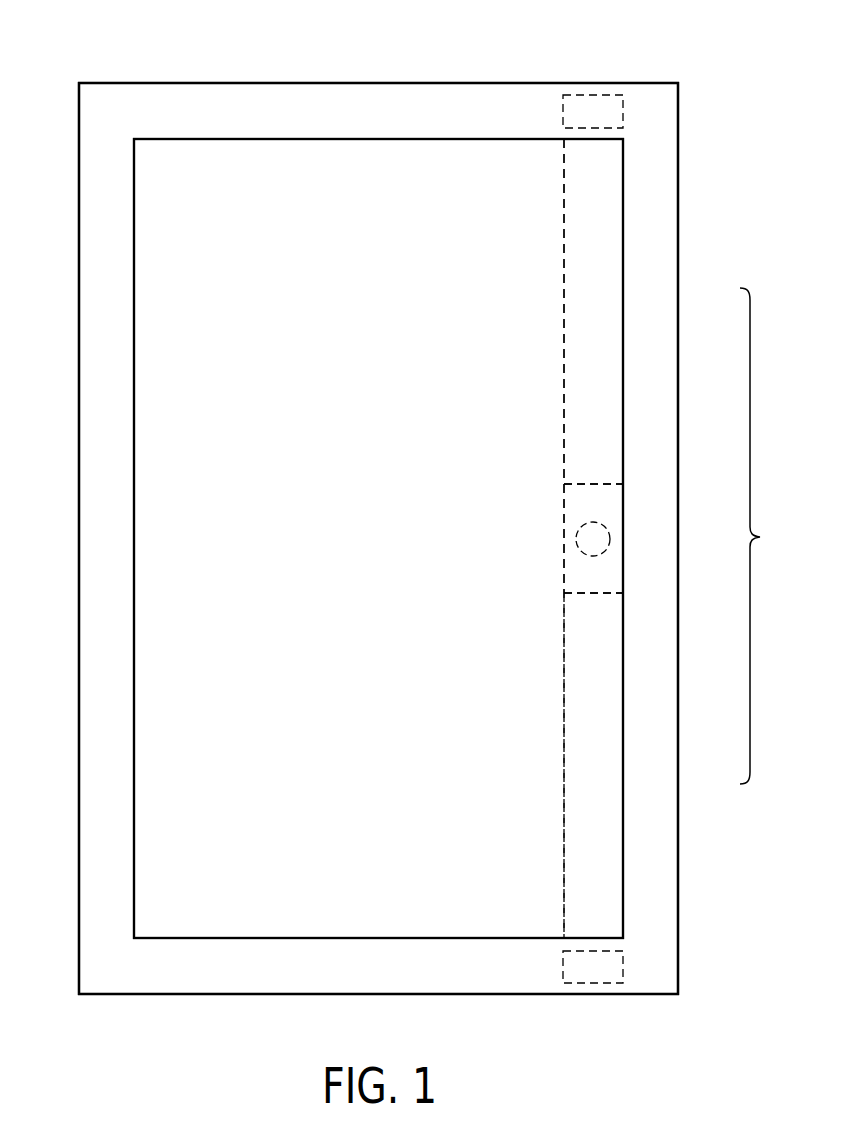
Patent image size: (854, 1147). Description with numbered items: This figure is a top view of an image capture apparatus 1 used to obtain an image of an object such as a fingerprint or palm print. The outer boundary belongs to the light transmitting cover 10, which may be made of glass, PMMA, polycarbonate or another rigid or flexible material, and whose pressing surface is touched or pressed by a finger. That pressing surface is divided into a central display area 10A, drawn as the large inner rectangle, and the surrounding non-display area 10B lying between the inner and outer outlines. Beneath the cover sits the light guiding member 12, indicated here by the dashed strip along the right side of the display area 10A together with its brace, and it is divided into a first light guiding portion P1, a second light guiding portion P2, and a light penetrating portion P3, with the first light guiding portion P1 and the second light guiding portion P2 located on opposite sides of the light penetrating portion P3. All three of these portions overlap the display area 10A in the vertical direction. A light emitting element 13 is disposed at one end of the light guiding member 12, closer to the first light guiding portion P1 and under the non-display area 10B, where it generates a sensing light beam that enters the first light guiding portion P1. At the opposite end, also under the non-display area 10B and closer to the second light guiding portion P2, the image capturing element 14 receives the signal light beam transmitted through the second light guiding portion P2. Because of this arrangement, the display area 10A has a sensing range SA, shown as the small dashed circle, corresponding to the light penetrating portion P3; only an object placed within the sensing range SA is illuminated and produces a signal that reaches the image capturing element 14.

The image capture apparatus 1 is at (688, 55).
The light transmitting cover 10 is at (679, 842).
The display area 10A is at (412, 175).
The non-display area 10B is at (255, 110).
The light guiding member 12 is at (678, 538).
The light emitting element 13 is at (593, 95).
The image capturing element 14 is at (593, 984).
The first light guiding portion P1 is at (597, 319).
The second light guiding portion P2 is at (597, 764).
The light penetrating portion P3 is at (597, 503).
The sensing range SA is at (575, 545).